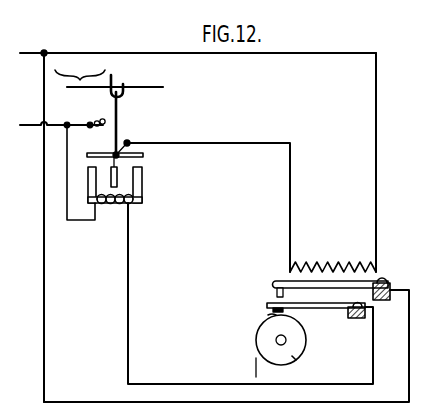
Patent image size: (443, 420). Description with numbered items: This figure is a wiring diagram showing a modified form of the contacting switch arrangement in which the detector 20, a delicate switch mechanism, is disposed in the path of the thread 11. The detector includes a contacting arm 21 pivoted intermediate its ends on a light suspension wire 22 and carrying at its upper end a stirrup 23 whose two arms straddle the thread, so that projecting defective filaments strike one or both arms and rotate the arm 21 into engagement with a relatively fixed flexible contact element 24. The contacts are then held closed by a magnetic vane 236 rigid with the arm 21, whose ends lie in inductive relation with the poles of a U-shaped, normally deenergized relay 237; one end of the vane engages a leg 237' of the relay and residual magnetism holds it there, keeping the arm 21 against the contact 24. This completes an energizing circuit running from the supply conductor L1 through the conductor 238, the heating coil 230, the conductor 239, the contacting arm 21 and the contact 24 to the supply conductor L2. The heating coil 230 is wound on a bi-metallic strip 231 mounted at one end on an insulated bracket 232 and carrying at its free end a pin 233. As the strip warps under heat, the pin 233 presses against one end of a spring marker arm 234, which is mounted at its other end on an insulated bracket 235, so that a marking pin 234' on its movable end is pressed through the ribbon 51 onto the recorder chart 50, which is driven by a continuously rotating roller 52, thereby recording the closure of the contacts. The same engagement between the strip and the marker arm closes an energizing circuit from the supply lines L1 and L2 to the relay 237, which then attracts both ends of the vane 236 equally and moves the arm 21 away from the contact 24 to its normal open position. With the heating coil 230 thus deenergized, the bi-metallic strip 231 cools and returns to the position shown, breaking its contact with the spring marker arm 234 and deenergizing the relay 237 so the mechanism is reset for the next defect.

The supply conductor L1 is at (22, 52).
The supply conductor L2 is at (20, 124).
The detector 20 is at (80, 67).
The thread 11 is at (161, 87).
The stirrup 23 is at (116, 78).
The contacting arm 21 is at (119, 120).
The flexible contact element 24 is at (99, 120).
The magnetic vane 236 is at (109, 145).
The suspension wire 22 is at (125, 157).
The relay 237 is at (139, 187).
The leg 237' is at (76, 187).
The conductor 238 is at (376, 129).
The conductor 239 is at (291, 181).
The heating coil 230 is at (330, 252).
The bi-metallic strip 231 is at (272, 281).
The insulated bracket 232 is at (391, 292).
The pin 233 is at (276, 292).
The spring marker arm 234 is at (316, 322).
The marking pin 234' is at (229, 312).
The insulated bracket 235 is at (362, 319).
The recorder chart 50 is at (256, 362).
The ribbon 51 is at (268, 315).
The roller 52 is at (293, 357).